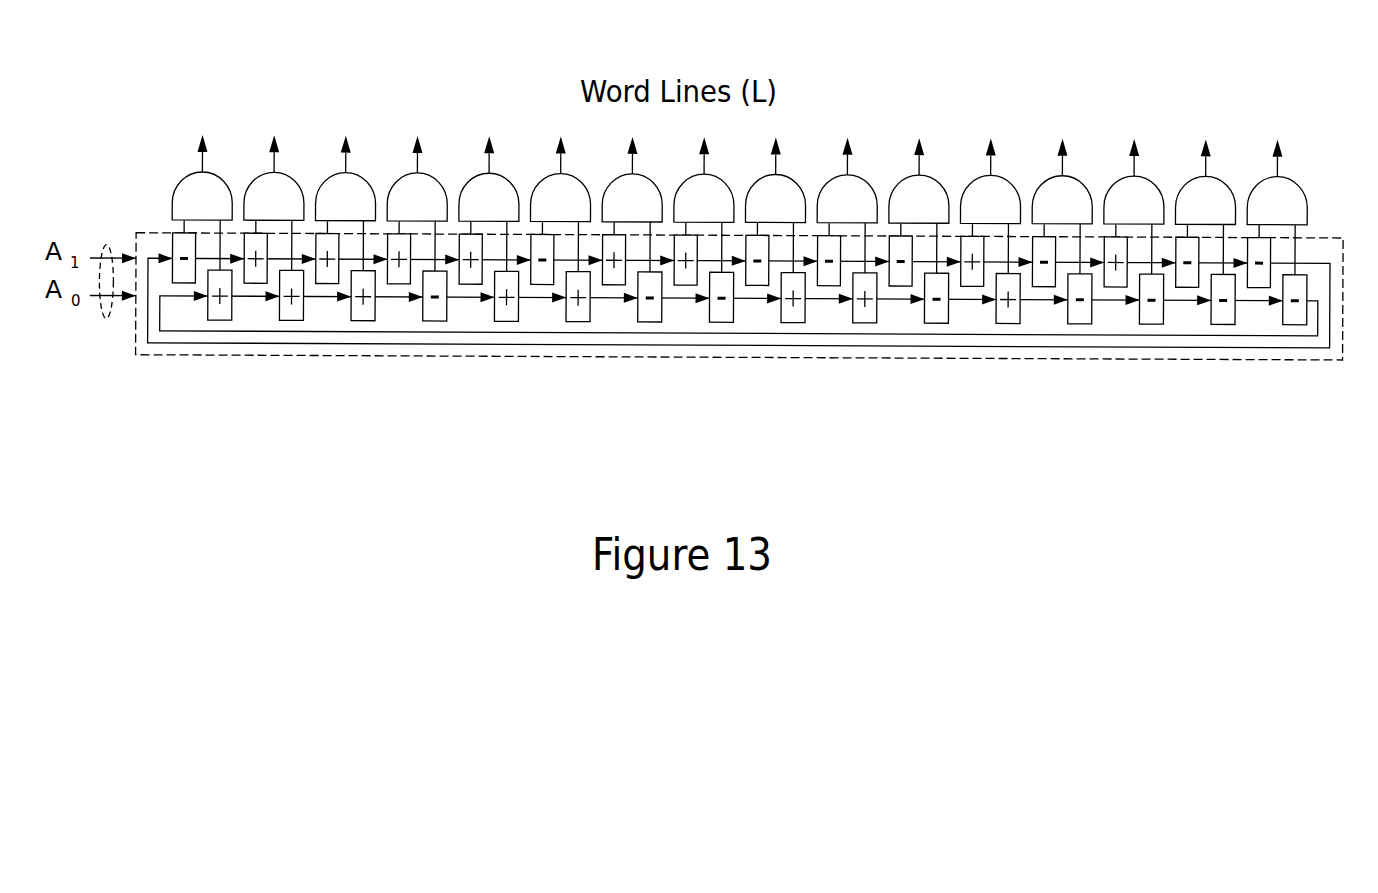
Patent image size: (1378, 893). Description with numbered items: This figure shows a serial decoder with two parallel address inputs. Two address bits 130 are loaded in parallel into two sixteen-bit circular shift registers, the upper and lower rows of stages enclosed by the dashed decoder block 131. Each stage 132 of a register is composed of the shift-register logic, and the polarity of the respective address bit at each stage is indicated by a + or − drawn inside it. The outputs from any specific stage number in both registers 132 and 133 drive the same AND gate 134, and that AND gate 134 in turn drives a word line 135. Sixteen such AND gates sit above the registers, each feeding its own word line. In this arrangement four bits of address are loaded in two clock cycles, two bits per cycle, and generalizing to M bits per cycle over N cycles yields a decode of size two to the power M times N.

The address bits 130 is at (110, 318).
The word line decoder 131 is at (746, 260).
The stage 132 is at (1293, 327).
The register 133 is at (1258, 288).
The AND gate 134 is at (1308, 202).
The word line 135 is at (1272, 165).